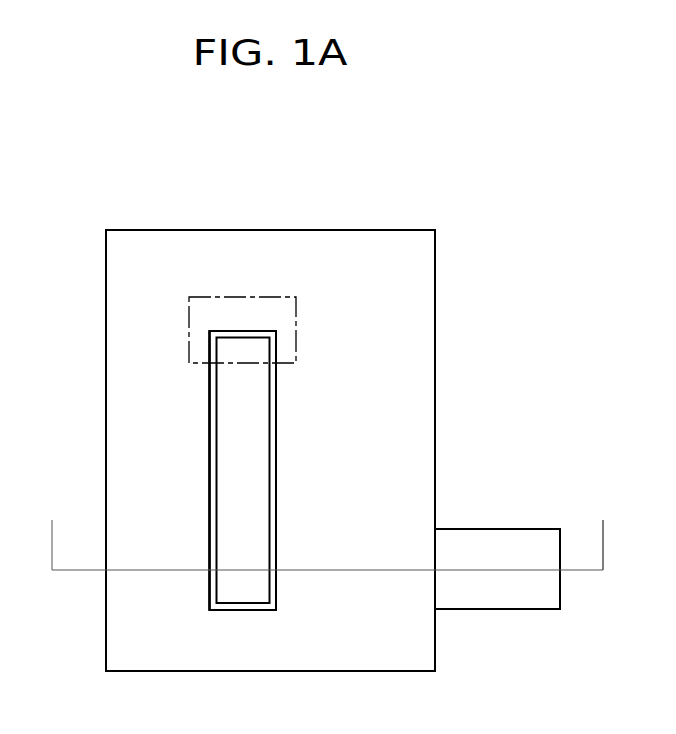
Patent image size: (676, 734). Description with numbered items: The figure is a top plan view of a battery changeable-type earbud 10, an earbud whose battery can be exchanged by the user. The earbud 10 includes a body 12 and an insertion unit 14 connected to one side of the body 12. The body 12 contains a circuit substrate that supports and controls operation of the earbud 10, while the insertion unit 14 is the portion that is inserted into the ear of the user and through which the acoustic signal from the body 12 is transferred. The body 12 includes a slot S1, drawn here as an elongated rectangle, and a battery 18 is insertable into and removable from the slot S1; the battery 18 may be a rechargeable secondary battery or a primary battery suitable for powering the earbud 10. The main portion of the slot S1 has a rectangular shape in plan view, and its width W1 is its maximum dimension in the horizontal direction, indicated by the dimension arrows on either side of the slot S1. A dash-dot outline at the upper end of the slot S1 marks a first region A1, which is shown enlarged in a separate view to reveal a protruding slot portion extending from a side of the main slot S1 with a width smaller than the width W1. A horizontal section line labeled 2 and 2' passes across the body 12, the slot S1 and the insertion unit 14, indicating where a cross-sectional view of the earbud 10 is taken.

The battery changeable-type earbud 10 is at (78, 200).
The body 12 is at (138, 302).
The insertion unit 14 is at (500, 529).
The battery 18 is at (243, 389).
The first region A1 is at (243, 297).
The slot S1 is at (209, 446).
The width W1 is at (152, 529).
The section line 2 is at (324, 529).
The section line 2' is at (602, 530).